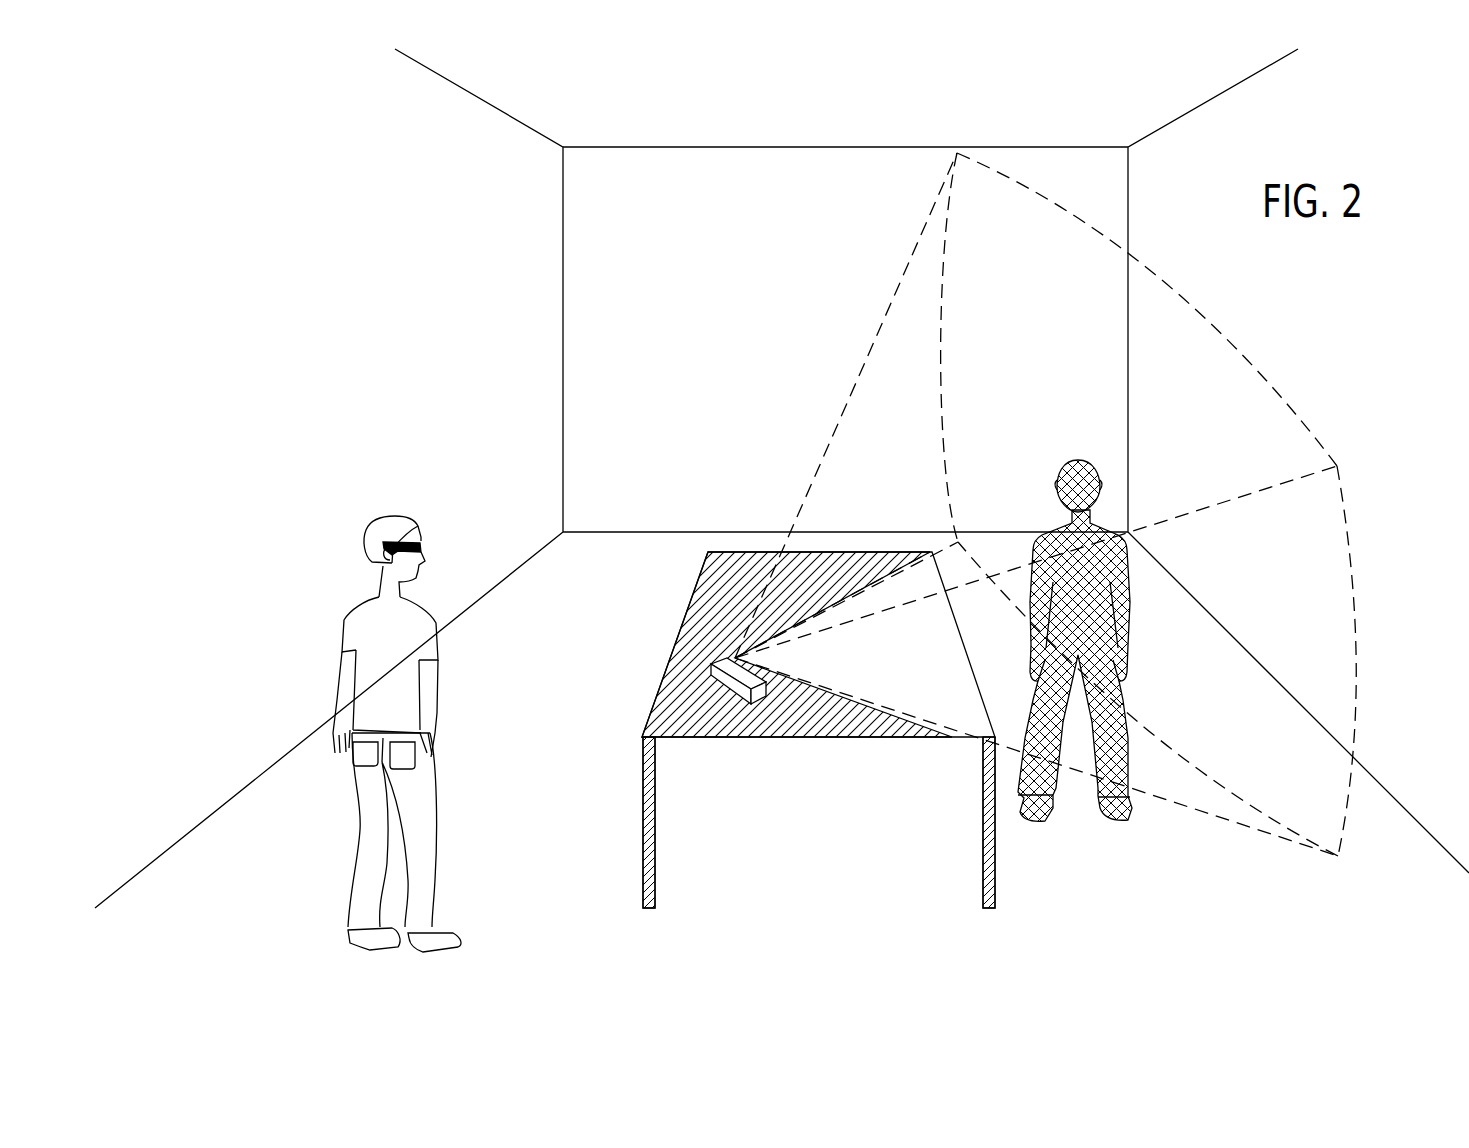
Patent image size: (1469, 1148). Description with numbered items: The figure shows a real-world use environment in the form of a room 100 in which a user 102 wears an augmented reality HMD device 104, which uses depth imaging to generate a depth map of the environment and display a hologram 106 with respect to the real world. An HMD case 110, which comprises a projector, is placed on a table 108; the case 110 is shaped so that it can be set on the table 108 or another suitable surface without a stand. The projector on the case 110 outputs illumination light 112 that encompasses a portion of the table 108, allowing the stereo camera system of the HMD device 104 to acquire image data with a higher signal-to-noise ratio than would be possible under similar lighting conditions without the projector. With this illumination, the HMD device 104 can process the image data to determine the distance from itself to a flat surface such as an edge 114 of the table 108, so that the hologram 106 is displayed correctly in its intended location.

The room 100 is at (612, 105).
The user 102 is at (355, 863).
The HMD device 104 is at (425, 547).
The hologram 106 is at (1130, 580).
The table 108 is at (665, 648).
The HMD case 110 is at (760, 705).
The illumination light 112 is at (1353, 612).
The edge of the table 114 is at (940, 568).